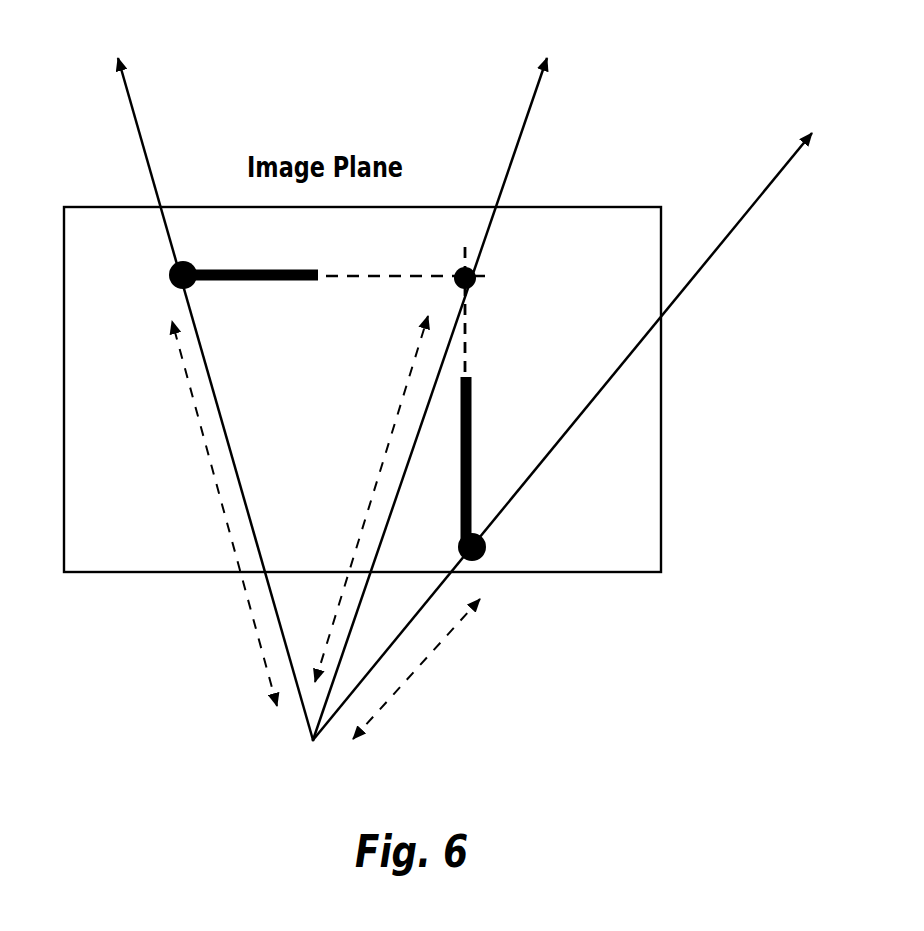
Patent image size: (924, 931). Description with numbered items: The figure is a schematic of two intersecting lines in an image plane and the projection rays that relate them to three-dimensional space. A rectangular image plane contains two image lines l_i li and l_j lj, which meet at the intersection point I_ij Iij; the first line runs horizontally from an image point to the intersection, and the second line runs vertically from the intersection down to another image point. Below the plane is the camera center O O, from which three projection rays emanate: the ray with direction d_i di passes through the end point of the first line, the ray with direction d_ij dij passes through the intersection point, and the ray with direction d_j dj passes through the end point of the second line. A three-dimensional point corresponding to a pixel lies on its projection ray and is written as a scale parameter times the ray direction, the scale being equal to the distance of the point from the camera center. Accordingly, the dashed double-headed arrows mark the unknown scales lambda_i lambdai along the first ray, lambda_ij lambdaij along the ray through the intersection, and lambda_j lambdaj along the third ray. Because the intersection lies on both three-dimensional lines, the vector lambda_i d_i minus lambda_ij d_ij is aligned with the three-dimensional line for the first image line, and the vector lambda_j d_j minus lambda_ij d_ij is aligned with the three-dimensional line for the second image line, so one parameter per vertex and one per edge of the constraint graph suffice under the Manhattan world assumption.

The projection ray direction d_i di is at (187, 392).
The projection ray direction d_ij dij is at (462, 390).
The projection ray direction d_j dj is at (593, 433).
The image line l_i li is at (250, 242).
The image line l_j lj is at (485, 462).
The intersection point I_ij Iij is at (494, 279).
The scale parameter lambda_i lambdai is at (224, 513).
The scale parameter lambda_ij lambdaij is at (371, 499).
The scale parameter lambda_j lambdaj is at (416, 669).
The camera center O is at (255, 716).